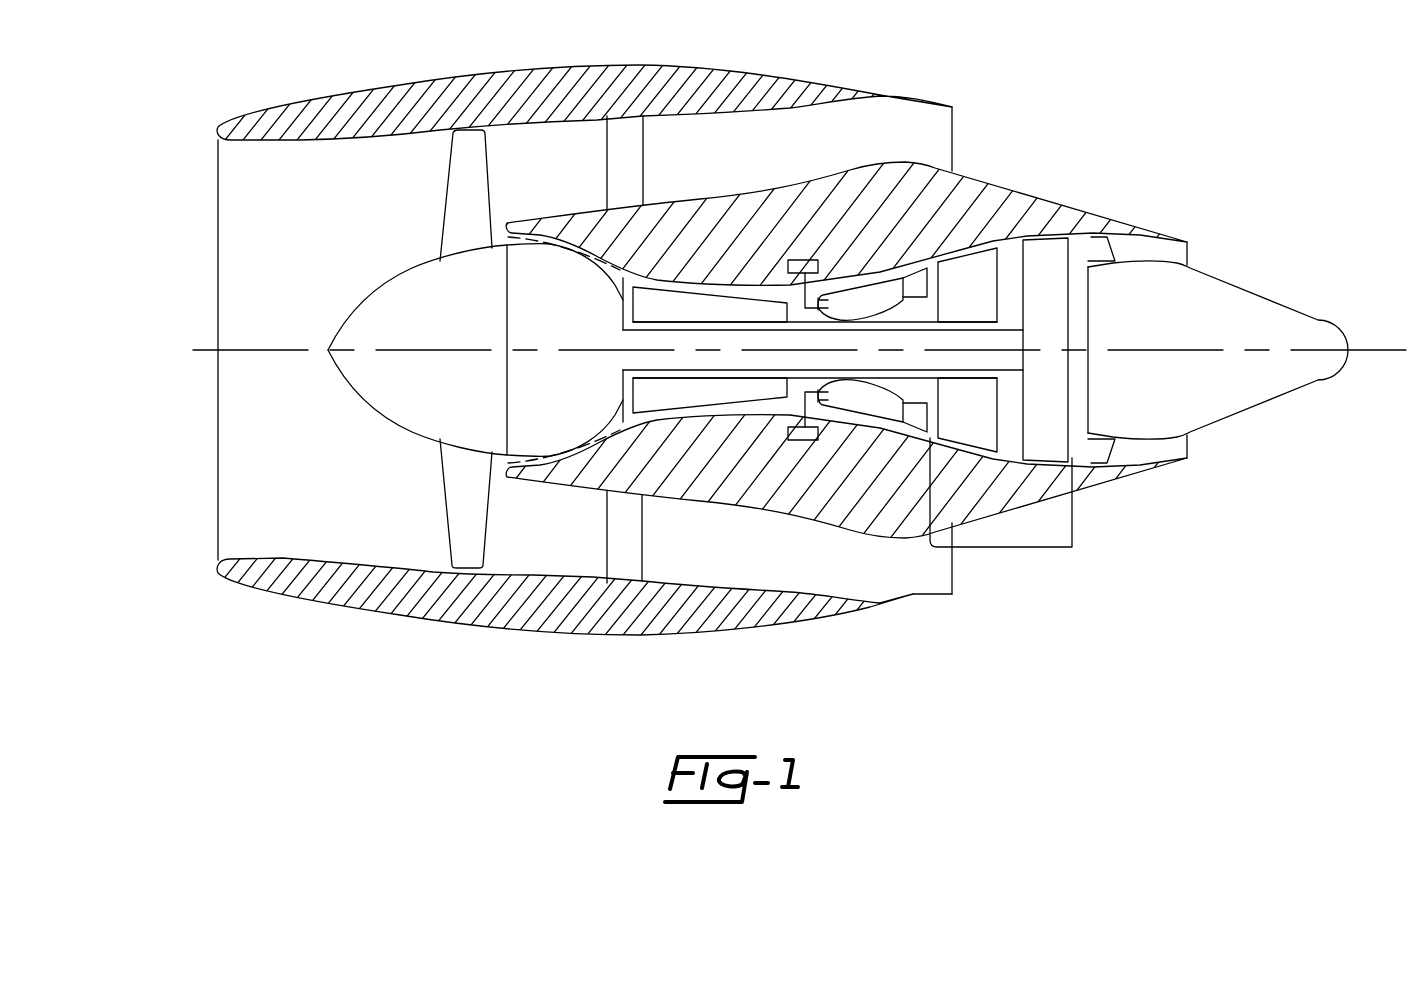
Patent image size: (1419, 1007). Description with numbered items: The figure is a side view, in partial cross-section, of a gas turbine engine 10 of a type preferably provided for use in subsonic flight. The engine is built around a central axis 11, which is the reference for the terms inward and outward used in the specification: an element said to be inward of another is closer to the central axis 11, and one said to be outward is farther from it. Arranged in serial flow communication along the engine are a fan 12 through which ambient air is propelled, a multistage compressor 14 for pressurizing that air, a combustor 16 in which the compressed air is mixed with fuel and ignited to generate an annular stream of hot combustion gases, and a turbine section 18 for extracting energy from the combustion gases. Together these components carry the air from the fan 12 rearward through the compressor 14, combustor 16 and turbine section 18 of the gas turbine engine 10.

The gas turbine engine 10 is at (1107, 133).
The central axis 11 is at (210, 352).
The fan 12 is at (463, 490).
The multistage compressor 14 is at (688, 303).
The combustor 16 is at (848, 300).
The turbine section 18 is at (1000, 547).